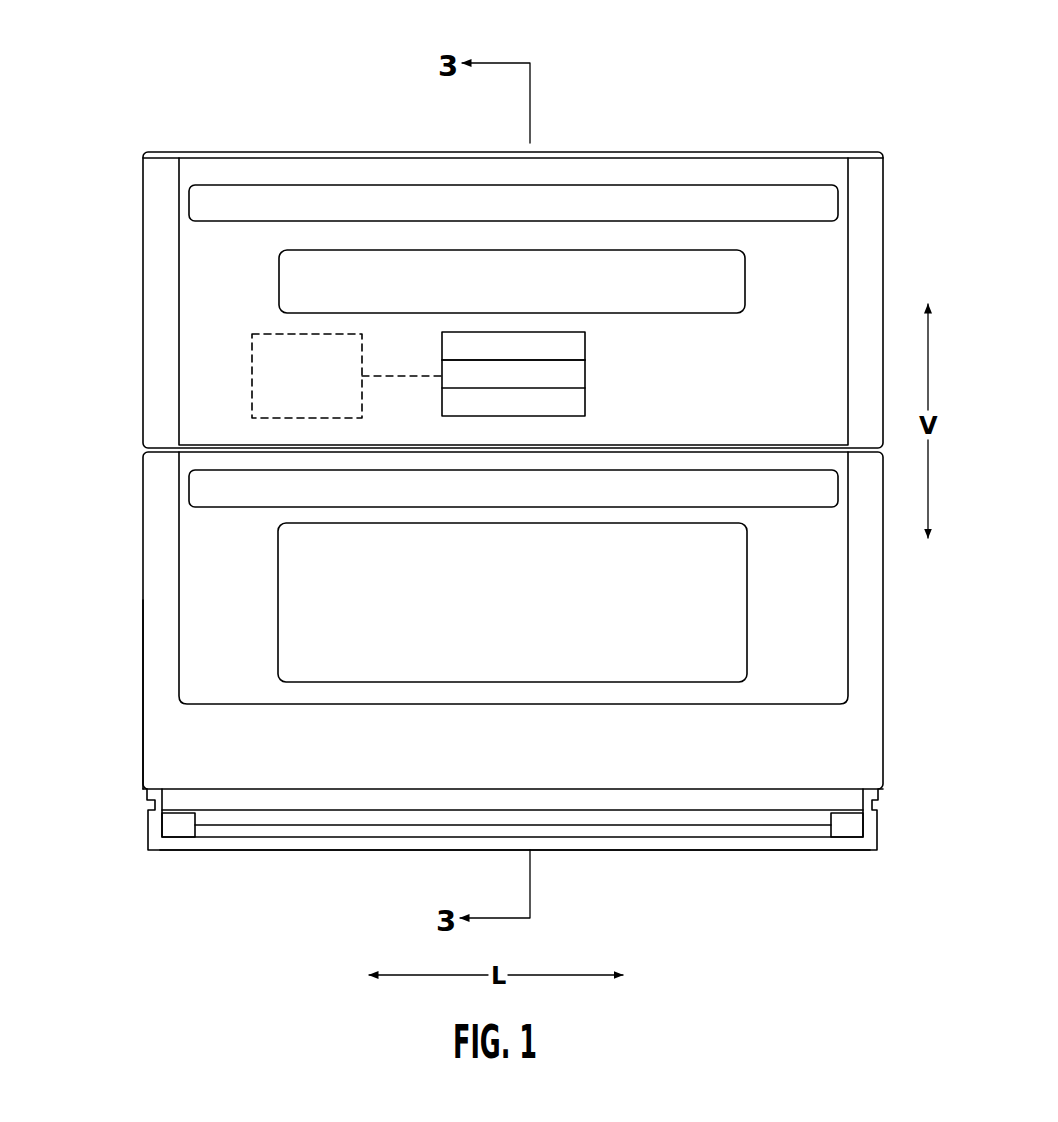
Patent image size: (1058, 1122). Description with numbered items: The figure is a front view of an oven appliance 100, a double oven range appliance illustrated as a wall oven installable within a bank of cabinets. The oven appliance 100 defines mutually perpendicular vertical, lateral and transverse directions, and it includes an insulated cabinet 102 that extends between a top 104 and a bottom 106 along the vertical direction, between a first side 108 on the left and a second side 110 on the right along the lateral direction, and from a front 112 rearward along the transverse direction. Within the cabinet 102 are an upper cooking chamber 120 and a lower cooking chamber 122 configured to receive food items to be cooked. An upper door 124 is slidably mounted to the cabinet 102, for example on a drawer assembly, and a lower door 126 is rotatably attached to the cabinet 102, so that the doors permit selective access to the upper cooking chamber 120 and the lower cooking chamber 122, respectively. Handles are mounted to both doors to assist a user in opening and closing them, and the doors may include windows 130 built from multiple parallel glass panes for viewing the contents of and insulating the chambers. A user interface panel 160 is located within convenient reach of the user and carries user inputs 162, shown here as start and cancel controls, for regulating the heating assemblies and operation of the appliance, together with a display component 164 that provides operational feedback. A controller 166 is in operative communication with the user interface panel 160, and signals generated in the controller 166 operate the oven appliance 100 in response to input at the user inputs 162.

The oven appliance 100 is at (789, 78).
The insulated cabinet 102 is at (876, 797).
The top 104 is at (648, 148).
The bottom 106 is at (663, 853).
The first side 108 is at (141, 733).
The second side 110 is at (885, 588).
The front 112 is at (210, 851).
The upper cooking chamber 120 is at (812, 307).
The lower cooking chamber 122 is at (806, 650).
The upper door 124 is at (158, 353).
The lower door 126 is at (153, 563).
The window 130 is at (298, 625).
The user interface panel 160 is at (490, 330).
The user inputs 162 is at (632, 337).
The display component 164 is at (554, 332).
The controller 166 is at (347, 376).